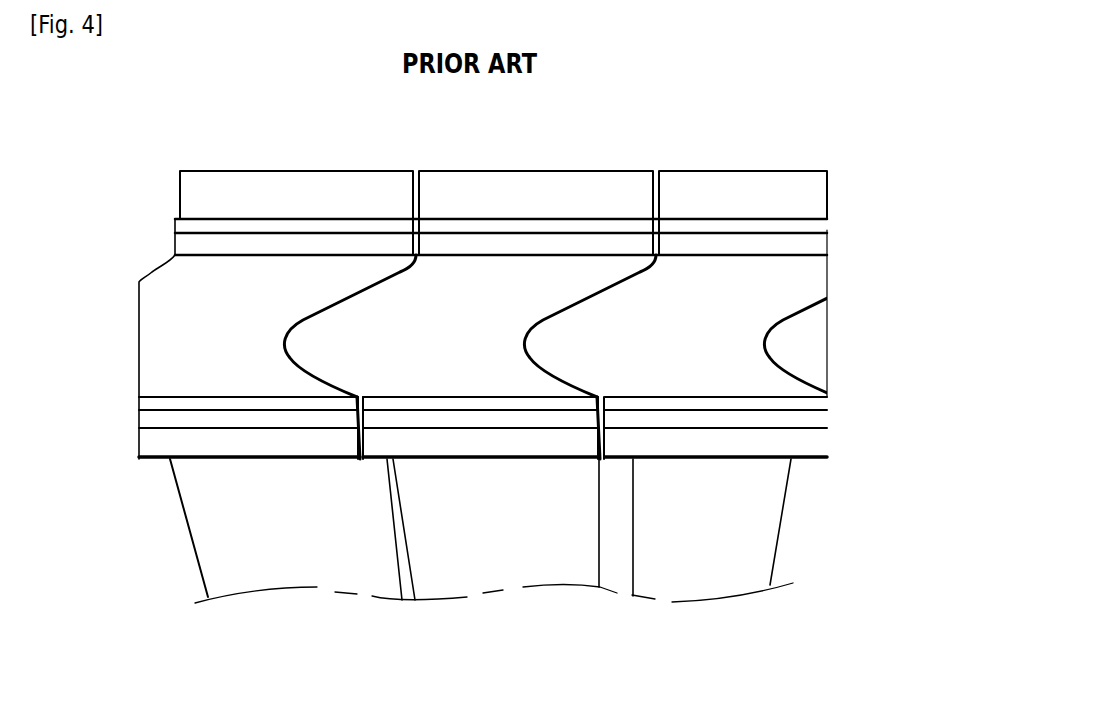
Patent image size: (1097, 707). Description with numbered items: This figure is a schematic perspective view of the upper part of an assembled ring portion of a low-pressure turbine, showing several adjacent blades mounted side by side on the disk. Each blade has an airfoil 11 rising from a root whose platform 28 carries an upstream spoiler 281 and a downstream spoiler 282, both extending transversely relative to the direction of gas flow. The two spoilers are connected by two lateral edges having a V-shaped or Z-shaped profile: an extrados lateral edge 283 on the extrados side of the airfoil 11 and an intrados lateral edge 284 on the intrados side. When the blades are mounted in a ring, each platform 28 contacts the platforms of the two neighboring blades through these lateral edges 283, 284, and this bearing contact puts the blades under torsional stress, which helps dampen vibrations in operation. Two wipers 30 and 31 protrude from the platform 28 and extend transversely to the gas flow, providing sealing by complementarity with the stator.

The airfoil 11 is at (288, 565).
The platform 28 is at (200, 304).
The upstream spoiler 281 is at (243, 443).
The downstream spoiler 282 is at (267, 211).
The extrados lateral edge 283 is at (380, 294).
The intrados lateral edge 284 is at (633, 291).
The wiper 30 is at (307, 397).
The wiper 31 is at (583, 232).